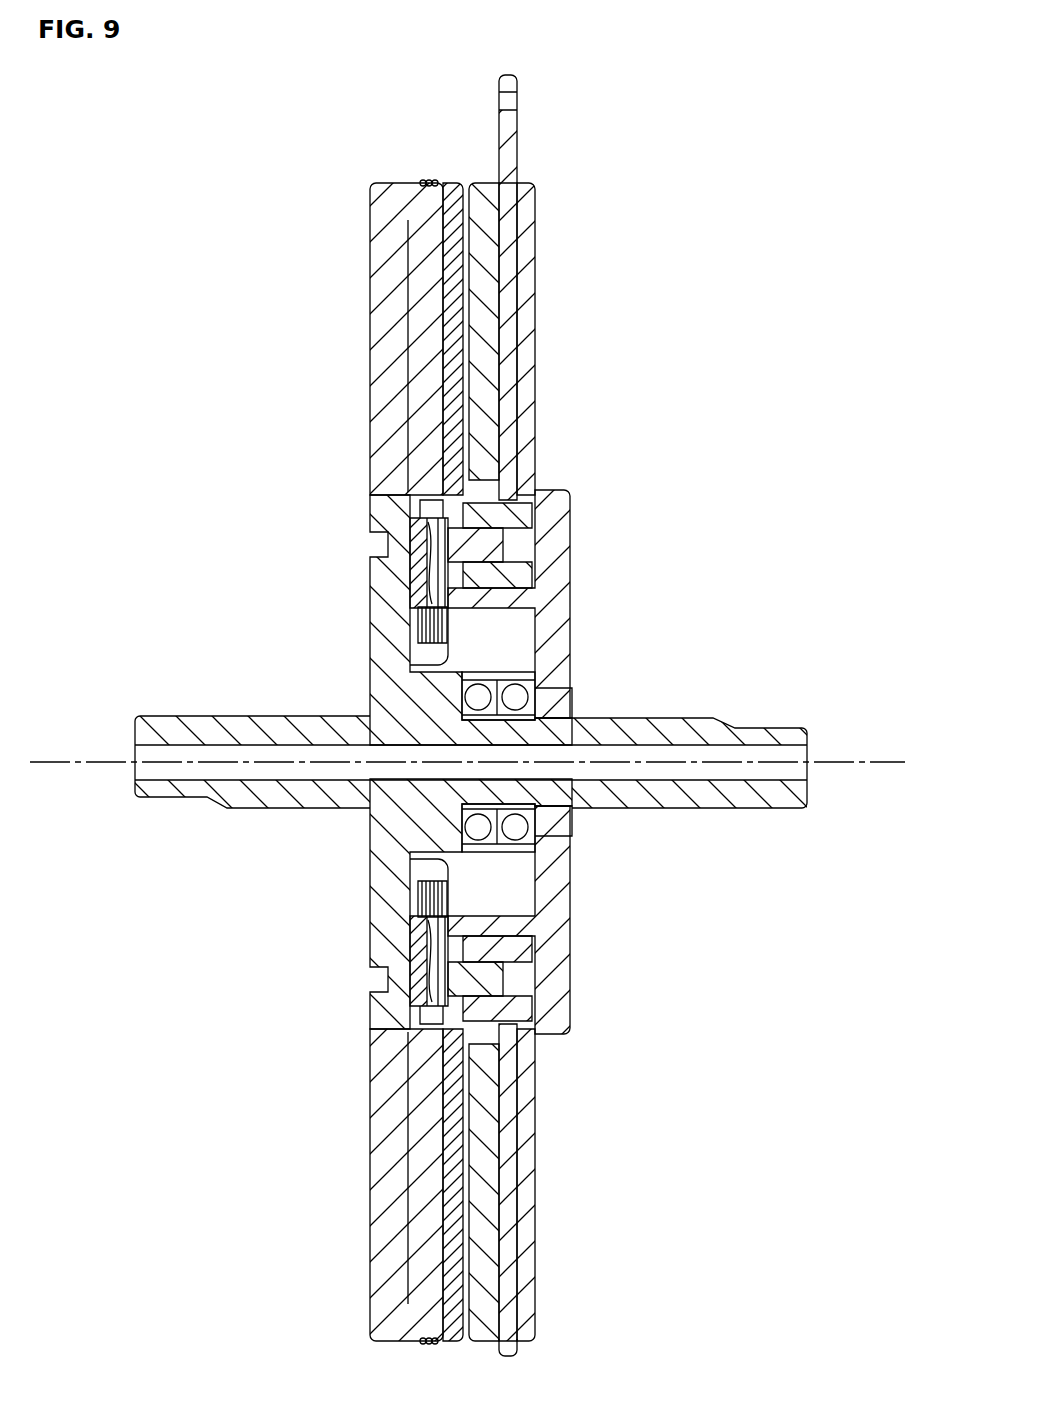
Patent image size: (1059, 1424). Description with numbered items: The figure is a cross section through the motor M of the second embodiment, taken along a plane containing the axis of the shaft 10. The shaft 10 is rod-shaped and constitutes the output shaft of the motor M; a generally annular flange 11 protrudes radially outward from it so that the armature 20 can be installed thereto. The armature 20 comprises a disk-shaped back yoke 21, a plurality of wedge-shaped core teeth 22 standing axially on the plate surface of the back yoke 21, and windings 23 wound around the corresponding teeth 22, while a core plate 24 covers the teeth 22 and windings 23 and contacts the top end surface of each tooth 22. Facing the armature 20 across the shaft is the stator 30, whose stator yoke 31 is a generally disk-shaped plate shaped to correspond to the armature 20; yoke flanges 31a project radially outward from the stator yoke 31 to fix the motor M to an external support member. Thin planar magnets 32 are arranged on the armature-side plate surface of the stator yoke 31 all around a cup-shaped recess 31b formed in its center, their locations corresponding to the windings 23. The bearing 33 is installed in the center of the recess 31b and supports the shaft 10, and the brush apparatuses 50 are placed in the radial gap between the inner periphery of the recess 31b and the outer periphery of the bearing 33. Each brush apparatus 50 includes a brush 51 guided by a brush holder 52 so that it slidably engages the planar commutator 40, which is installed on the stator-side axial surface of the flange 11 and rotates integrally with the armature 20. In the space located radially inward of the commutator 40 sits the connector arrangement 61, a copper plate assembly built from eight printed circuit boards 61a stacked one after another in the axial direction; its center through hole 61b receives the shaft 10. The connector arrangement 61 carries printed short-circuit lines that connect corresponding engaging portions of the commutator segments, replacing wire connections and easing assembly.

The motor M is at (205, 173).
The shaft 10 is at (176, 716).
The flange 11 is at (375, 575).
The armature 20 is at (356, 219).
The back yoke 21 is at (370, 290).
The core teeth 22 is at (425, 383).
The windings 23 is at (430, 180).
The core plate 24 is at (450, 181).
The stator 30 is at (568, 225).
The stator yoke 31 is at (535, 290).
The yoke flanges 31a is at (517, 138).
The recess 31b is at (570, 555).
The magnets 32 is at (508, 383).
The bearing 33 is at (565, 695).
The commutator 40 is at (395, 1000).
The brush apparatus 50 is at (528, 983).
The brush 51 is at (527, 1012).
The brush holder 52 is at (522, 952).
The connector arrangement 61 is at (420, 630).
The printed circuit boards 61a is at (410, 648).
The center through hole 61b is at (415, 880).